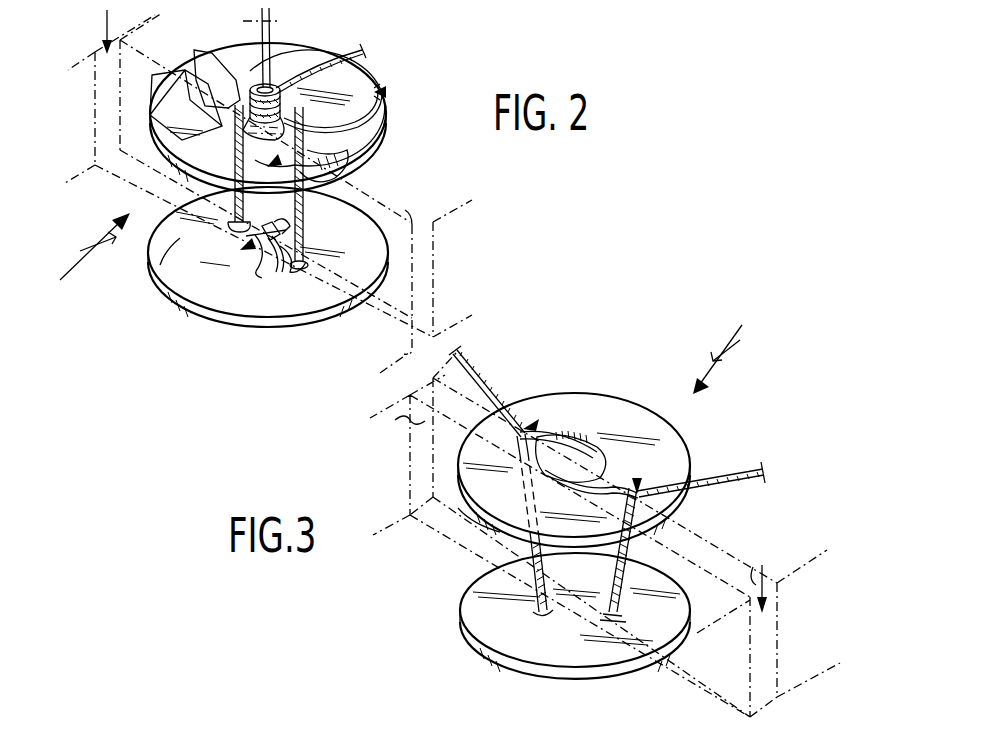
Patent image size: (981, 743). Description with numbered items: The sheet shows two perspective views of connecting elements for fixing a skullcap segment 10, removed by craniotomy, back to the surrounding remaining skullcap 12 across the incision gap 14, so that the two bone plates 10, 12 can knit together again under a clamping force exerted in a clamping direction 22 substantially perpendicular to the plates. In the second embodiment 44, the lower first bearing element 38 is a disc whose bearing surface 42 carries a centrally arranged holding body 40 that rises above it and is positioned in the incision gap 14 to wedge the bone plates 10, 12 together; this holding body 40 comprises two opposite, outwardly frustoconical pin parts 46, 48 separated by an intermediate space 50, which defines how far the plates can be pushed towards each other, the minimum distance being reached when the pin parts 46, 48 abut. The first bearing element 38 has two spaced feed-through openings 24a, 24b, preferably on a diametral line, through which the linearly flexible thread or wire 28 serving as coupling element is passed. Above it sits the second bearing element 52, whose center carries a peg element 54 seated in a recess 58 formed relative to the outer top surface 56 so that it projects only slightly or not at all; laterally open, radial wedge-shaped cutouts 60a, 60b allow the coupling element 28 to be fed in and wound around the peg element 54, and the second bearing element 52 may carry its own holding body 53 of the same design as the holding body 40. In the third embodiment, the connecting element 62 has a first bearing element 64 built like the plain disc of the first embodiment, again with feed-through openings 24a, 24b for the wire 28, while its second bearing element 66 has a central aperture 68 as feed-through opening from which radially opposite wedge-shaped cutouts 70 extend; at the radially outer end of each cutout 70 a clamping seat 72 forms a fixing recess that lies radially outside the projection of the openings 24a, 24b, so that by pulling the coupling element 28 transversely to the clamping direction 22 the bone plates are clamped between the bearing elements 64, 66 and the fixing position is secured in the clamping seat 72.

In FIG. 2, the skullcap segment 10 is at (471, 304).
In FIG. 3, the skullcap segment 10 is at (824, 632).
In FIG. 2, the skullcap 12 is at (407, 352).
In FIG. 3, the skullcap 12 is at (744, 689).
In FIG. 2, the incision gap 14 is at (440, 203).
In FIG. 3, the incision gap 14 is at (432, 423).
In FIG. 2, the clamping direction 22 is at (103, 18).
In FIG. 3, the clamping direction 22 is at (763, 563).
In FIG. 2, the feed-through opening 24a is at (236, 240).
In FIG. 3, the feed-through opening 24a is at (530, 542).
In FIG. 2, the feed-through opening 24b is at (302, 266).
In FIG. 3, the feed-through opening 24b is at (606, 604).
In FIG. 2, the thread or wire 28 is at (330, 190).
In FIG. 3, the thread or wire 28 is at (498, 393).
In FIG. 2, the first bearing element 38 is at (136, 252).
In FIG. 2, the holding body 40 is at (248, 246).
In FIG. 2, the bearing surface 42 is at (182, 246).
In FIG. 2, the second embodiment 44 is at (88, 262).
In FIG. 2, the pin part 46 is at (260, 262).
In FIG. 2, the pin part 48 is at (272, 268).
In FIG. 2, the intermediate space 50 is at (292, 268).
In FIG. 2, the second bearing element 52 is at (386, 100).
In FIG. 2, the holding body 53 is at (335, 152).
In FIG. 2, the peg element 54 is at (276, 86).
In FIG. 2, the top surface 56 is at (327, 76).
In FIG. 2, the recess 58 is at (380, 88).
In FIG. 2, the wedge-shaped cutout 60a is at (348, 124).
In FIG. 2, the wedge-shaped cutout 60b is at (212, 56).
In FIG. 3, the connecting element 62 is at (727, 341).
In FIG. 3, the first bearing element 64 is at (446, 604).
In FIG. 3, the second bearing element 66 is at (445, 456).
In FIG. 3, the central aperture 68 is at (470, 506).
In FIG. 3, the wedge-shaped cutout 70 is at (592, 430).
In FIG. 3, the clamping seat 72 is at (538, 424).